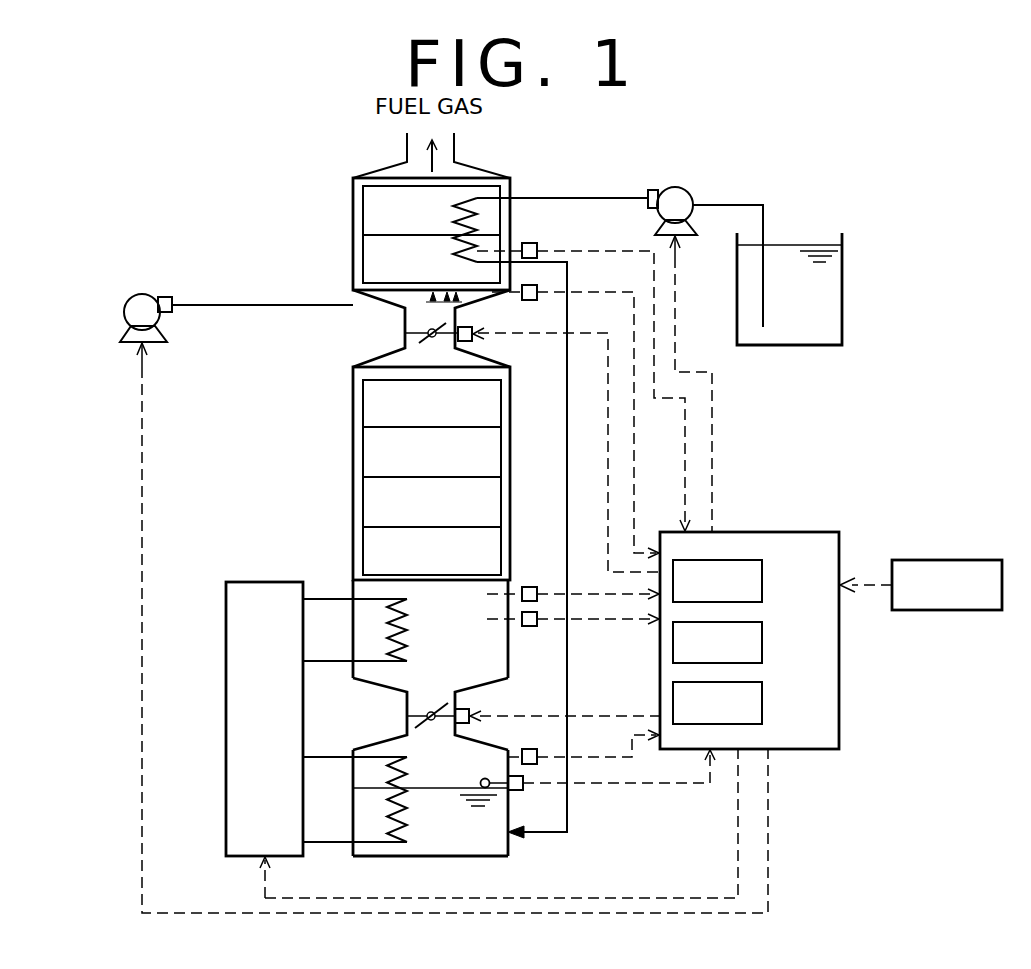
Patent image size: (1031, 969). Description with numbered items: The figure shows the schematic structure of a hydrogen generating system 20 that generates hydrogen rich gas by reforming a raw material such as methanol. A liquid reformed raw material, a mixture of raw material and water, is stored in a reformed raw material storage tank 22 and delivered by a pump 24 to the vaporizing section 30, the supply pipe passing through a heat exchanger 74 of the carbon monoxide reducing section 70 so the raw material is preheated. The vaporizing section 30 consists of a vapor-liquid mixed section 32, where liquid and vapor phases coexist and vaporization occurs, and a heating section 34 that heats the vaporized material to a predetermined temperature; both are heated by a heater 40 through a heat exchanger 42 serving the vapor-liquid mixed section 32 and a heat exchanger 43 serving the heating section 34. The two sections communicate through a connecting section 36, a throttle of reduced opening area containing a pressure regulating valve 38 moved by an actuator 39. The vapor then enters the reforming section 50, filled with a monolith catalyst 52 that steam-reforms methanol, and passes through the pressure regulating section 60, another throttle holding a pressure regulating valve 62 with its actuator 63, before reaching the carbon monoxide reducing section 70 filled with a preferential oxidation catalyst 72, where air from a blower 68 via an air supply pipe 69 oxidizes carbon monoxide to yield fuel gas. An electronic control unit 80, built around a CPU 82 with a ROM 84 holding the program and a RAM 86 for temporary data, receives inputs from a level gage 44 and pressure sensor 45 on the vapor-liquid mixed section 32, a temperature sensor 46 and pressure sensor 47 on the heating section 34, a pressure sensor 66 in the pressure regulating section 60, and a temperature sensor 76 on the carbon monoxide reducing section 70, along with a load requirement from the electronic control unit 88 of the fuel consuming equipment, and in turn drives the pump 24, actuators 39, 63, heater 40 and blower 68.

The hydrogen generating system 20 is at (947, 352).
The reformed raw material storage tank 22 is at (842, 300).
The pump 24 is at (682, 188).
The vaporizing section 30 is at (263, 508).
The vapor-liquid mixed section 32 is at (508, 848).
The heating section 34 is at (508, 672).
The connecting section 36 is at (407, 698).
The pressure regulating valve 38 is at (416, 723).
The actuator 39 is at (470, 709).
The heater 40 is at (226, 738).
The heat exchanger 42 is at (337, 845).
The heat exchanger 43 is at (330, 598).
The level gage 44 is at (525, 790).
The pressure sensor 45 is at (537, 752).
The temperature sensor 46 is at (527, 626).
The pressure sensor 47 is at (530, 587).
The reforming section 50 is at (353, 395).
The monolith catalyst 52 is at (363, 450).
The pressure regulating section 60 is at (353, 290).
The pressure regulating valve 62 is at (416, 336).
The actuator 63 is at (472, 341).
The pressure sensor 66 is at (537, 302).
The blower 68 is at (130, 300).
The air supply pipe 69 is at (217, 306).
The carbon monoxide reducing section 70 is at (353, 182).
The preferential oxidation catalyst 72 is at (362, 245).
The heat exchanger 74 is at (470, 207).
The temperature sensor 76 is at (537, 246).
The electronic control unit 80 is at (839, 702).
The CPU 82 is at (762, 580).
The ROM 84 is at (762, 642).
The RAM 86 is at (762, 702).
The electronic control unit (ECU) 88 is at (950, 560).